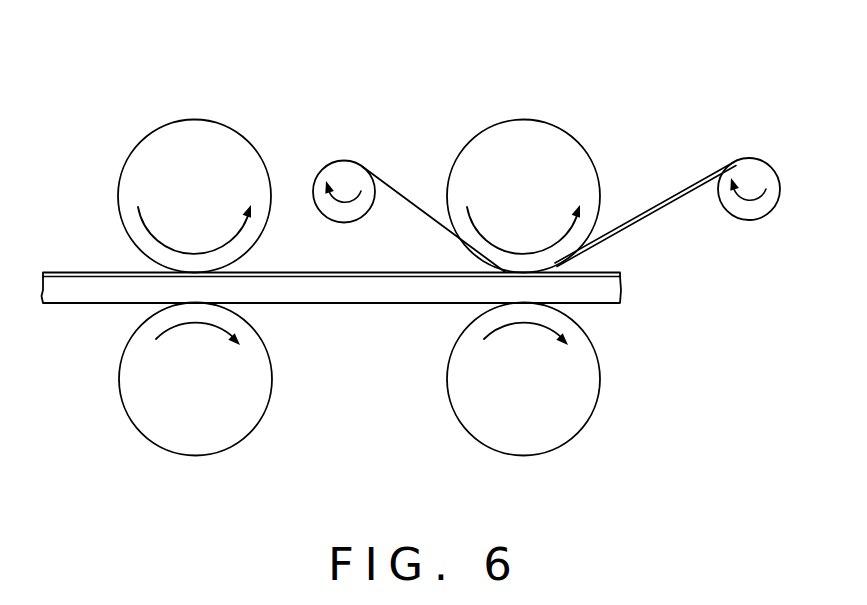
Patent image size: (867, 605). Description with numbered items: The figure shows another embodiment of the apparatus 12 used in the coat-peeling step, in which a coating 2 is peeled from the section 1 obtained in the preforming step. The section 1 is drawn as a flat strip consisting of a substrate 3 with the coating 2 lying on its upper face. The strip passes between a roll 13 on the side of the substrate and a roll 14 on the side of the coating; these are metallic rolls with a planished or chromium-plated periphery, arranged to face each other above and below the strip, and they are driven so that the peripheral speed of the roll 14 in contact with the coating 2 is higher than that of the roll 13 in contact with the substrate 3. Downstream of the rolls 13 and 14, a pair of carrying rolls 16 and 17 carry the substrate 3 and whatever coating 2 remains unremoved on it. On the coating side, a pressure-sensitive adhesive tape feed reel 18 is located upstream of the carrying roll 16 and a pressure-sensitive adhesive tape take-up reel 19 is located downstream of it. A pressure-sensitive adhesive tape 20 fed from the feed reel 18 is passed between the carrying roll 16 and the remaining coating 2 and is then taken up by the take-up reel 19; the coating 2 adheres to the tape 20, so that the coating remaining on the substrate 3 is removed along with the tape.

The section 1 is at (82, 297).
The coating 2 is at (77, 271).
The substrate 3 is at (358, 290).
The apparatus 12 is at (290, 116).
The roll on the side of the substrate 13 is at (197, 440).
The roll on the side of the coating 14 is at (193, 137).
The carrying roll 16 is at (528, 135).
The carrying roll 17 is at (533, 440).
The pressure-sensitive adhesive tape feed reel 18 is at (343, 175).
The pressure-sensitive adhesive tape take-up reel 19 is at (751, 168).
The pressure-sensitive adhesive tape 20 is at (402, 196).